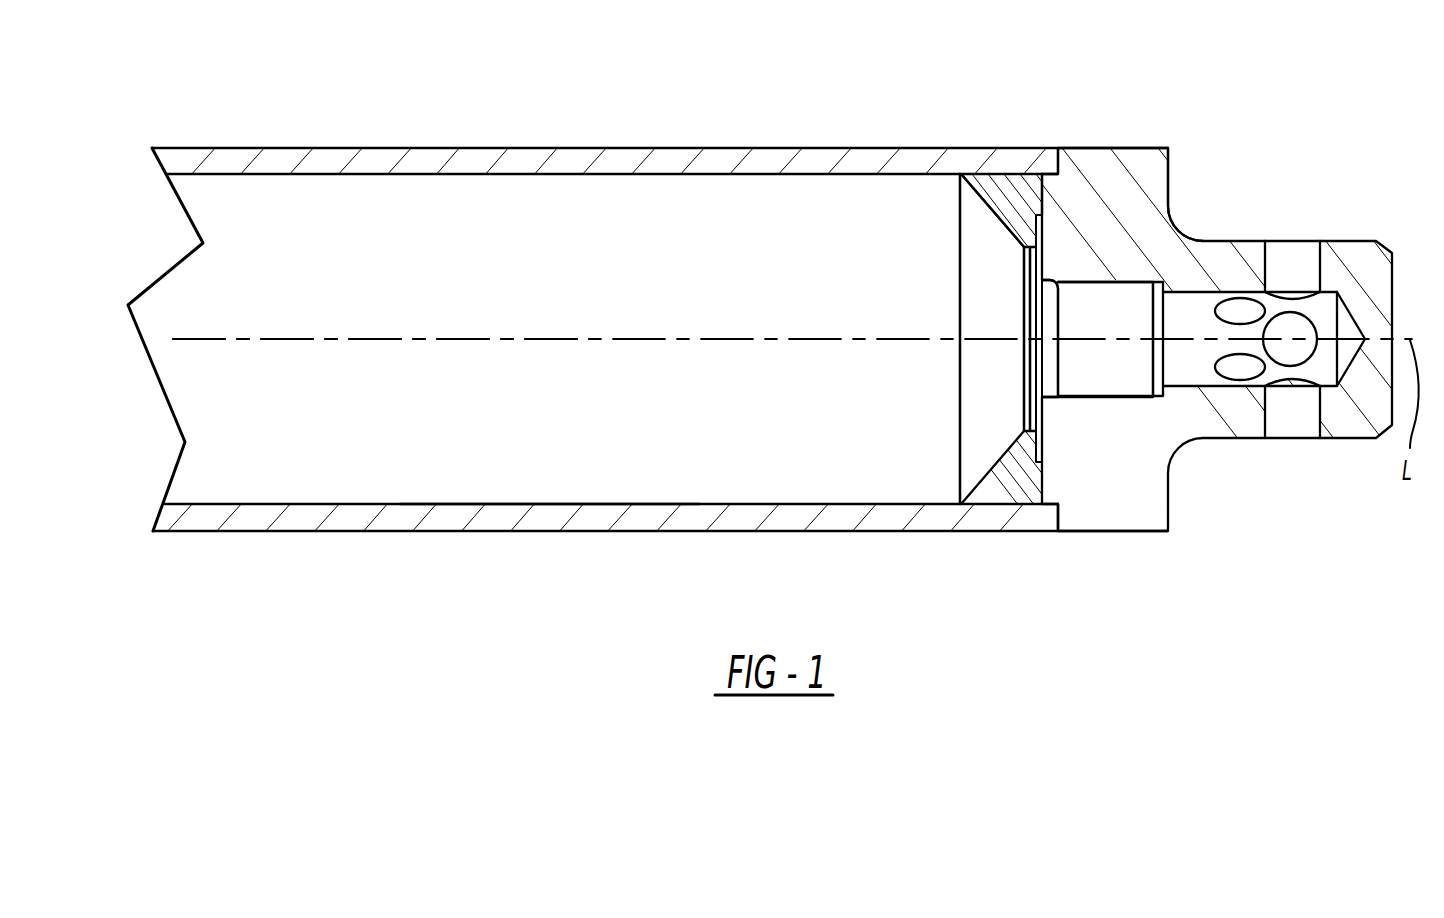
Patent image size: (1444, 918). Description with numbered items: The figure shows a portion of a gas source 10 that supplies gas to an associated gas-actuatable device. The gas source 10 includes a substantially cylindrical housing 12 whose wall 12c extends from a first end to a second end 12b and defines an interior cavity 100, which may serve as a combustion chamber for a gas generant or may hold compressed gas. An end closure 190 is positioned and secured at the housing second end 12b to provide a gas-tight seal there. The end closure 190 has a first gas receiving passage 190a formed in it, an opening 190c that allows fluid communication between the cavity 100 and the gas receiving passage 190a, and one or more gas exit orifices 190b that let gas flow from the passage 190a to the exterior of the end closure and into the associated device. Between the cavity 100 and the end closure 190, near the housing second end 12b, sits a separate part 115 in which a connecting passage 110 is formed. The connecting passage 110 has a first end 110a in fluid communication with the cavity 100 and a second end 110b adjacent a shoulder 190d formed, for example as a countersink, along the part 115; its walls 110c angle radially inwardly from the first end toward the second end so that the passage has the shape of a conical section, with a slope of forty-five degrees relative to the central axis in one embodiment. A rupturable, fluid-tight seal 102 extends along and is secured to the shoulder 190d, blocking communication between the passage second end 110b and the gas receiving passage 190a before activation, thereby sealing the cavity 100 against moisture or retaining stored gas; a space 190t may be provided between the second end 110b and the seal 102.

The gas source 10 is at (435, 640).
The housing 12 is at (203, 540).
The housing second end 12b is at (1015, 533).
The housing wall 12c is at (548, 520).
The housing interior cavity 100 is at (240, 203).
The rupturable seal 102 is at (1046, 363).
The connecting passage 110 is at (978, 452).
The connecting passage first end 110a is at (958, 372).
The connecting passage second end 110b is at (1013, 373).
The connecting passage wall 110c is at (989, 203).
The separate part 115 is at (1020, 200).
The end closure 190 is at (1404, 286).
The first gas receiving passage 190a is at (1127, 303).
The gas exit orifice 190b is at (1295, 258).
The opening 190c is at (1043, 277).
The shoulder 190d is at (1043, 232).
The space 190t is at (1032, 334).